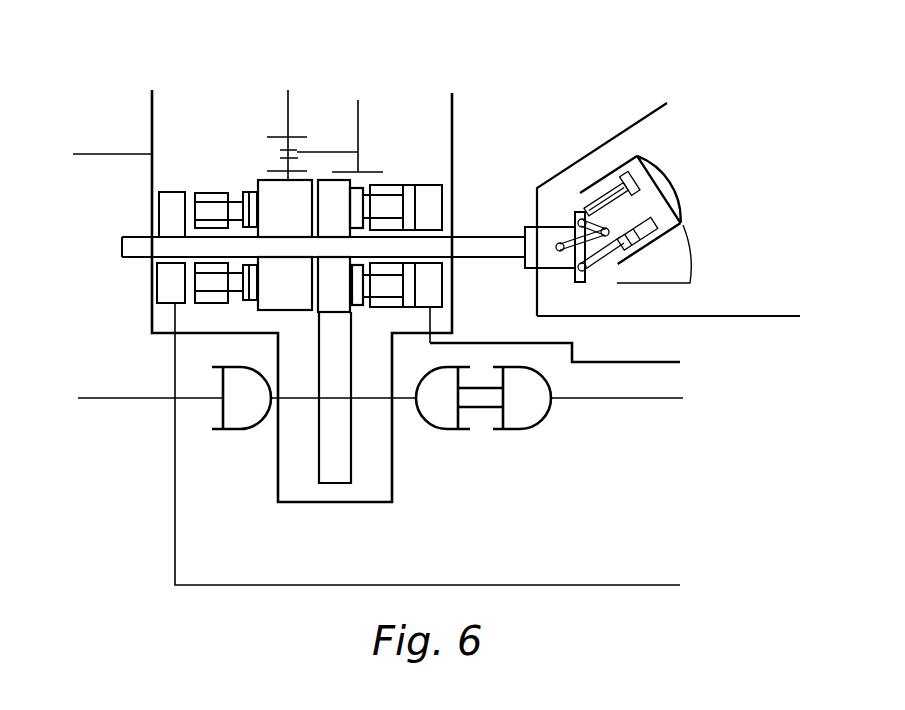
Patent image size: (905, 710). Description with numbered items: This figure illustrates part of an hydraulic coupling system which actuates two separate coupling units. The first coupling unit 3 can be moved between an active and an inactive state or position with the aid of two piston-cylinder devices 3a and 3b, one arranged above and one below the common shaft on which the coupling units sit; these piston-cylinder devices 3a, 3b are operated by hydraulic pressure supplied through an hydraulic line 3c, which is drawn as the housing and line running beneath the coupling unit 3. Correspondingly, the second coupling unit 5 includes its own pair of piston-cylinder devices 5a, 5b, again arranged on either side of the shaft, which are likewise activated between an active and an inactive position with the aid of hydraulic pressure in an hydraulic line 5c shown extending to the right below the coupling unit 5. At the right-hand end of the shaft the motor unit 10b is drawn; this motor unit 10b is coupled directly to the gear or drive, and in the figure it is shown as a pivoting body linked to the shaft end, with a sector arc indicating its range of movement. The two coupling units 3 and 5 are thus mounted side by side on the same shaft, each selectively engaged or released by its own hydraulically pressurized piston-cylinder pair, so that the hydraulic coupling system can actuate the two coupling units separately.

The coupling unit 3 is at (238, 174).
The piston-cylinder device 3a is at (168, 215).
The piston-cylinder device 3b is at (170, 282).
The hydraulic line 3c is at (175, 448).
The coupling unit 5 is at (401, 168).
The piston-cylinder device 5a is at (433, 208).
The piston-cylinder device 5b is at (432, 285).
The hydraulic line 5c is at (662, 362).
The motor unit 10b is at (665, 167).